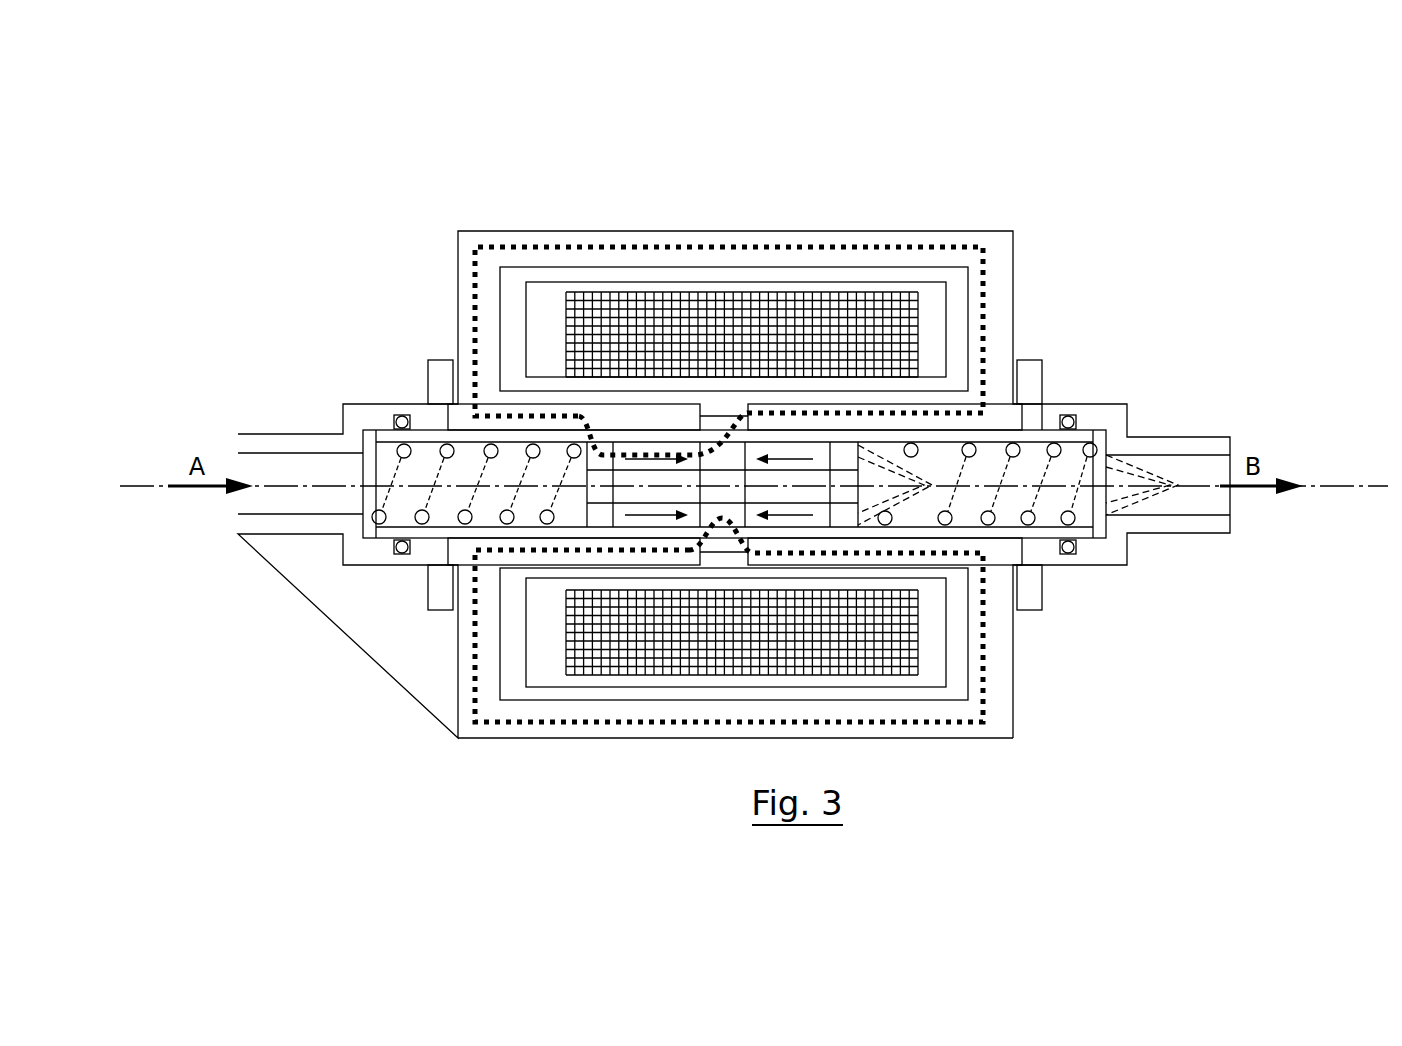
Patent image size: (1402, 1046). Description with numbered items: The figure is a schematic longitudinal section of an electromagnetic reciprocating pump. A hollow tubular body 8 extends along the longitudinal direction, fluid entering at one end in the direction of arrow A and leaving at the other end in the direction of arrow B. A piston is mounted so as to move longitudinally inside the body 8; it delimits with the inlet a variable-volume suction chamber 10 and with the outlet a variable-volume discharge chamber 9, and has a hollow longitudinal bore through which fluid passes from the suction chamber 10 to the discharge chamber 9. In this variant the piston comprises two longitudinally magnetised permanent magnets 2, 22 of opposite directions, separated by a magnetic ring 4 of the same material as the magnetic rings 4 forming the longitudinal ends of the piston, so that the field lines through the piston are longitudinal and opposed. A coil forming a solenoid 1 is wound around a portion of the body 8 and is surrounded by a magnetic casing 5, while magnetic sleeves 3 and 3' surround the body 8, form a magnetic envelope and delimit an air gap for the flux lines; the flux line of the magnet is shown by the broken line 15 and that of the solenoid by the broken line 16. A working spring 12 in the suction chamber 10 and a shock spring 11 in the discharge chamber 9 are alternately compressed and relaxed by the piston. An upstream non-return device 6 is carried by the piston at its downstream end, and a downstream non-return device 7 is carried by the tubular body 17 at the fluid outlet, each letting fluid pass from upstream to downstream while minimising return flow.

The solenoid 1 is at (710, 334).
The permanent magnet 2 is at (660, 436).
The magnetic sleeve 3 is at (734, 447).
The magnetic sleeve 3' is at (987, 775).
The magnetic ring 4 is at (690, 600).
The magnetic casing 5 is at (547, 731).
The upstream non-return device 6 is at (907, 500).
The downstream non-return device 7 is at (1147, 502).
The hollow tubular body 8 is at (1060, 438).
The discharge chamber 9 is at (943, 458).
The suction chamber 10 is at (455, 417).
The shock spring 11 is at (985, 496).
The working spring 12 is at (460, 498).
The magnet flux line 15 is at (992, 240).
The solenoid flux line 16 is at (460, 640).
The tubular body 17 is at (1048, 421).
The permanent magnet 22 is at (797, 453).